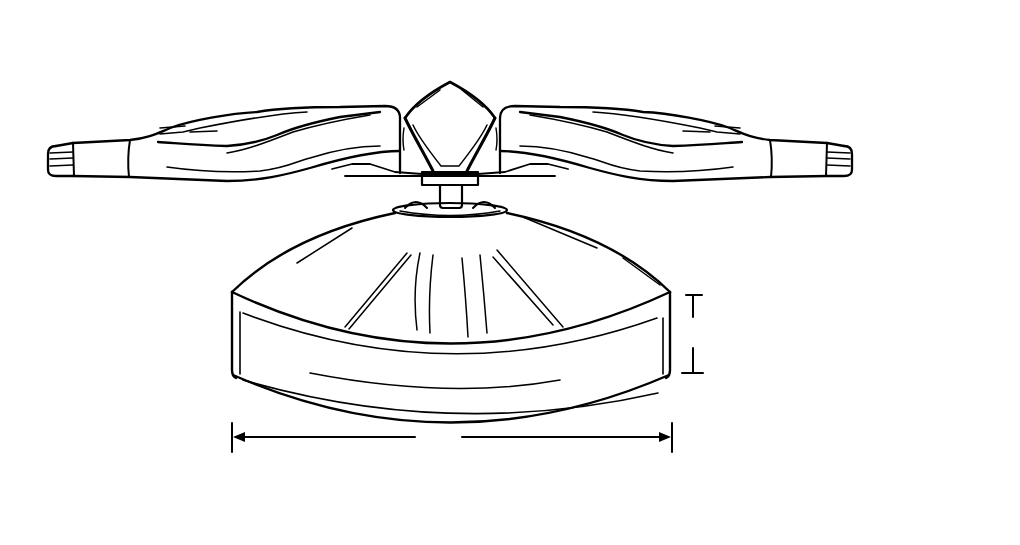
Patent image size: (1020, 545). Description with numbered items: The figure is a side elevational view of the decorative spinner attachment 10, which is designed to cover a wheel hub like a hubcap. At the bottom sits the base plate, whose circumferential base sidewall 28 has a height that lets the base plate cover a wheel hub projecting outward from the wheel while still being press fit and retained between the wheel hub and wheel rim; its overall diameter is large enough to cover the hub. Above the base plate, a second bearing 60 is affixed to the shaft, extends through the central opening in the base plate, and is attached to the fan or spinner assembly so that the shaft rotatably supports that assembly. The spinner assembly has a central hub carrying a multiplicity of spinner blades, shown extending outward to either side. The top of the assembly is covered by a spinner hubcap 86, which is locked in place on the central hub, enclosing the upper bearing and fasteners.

The decorative spinner attachment 10 is at (531, 62).
The spinner hubcap 86 is at (453, 93).
The second bearing 60 is at (422, 178).
The base sidewall 28 is at (254, 353).